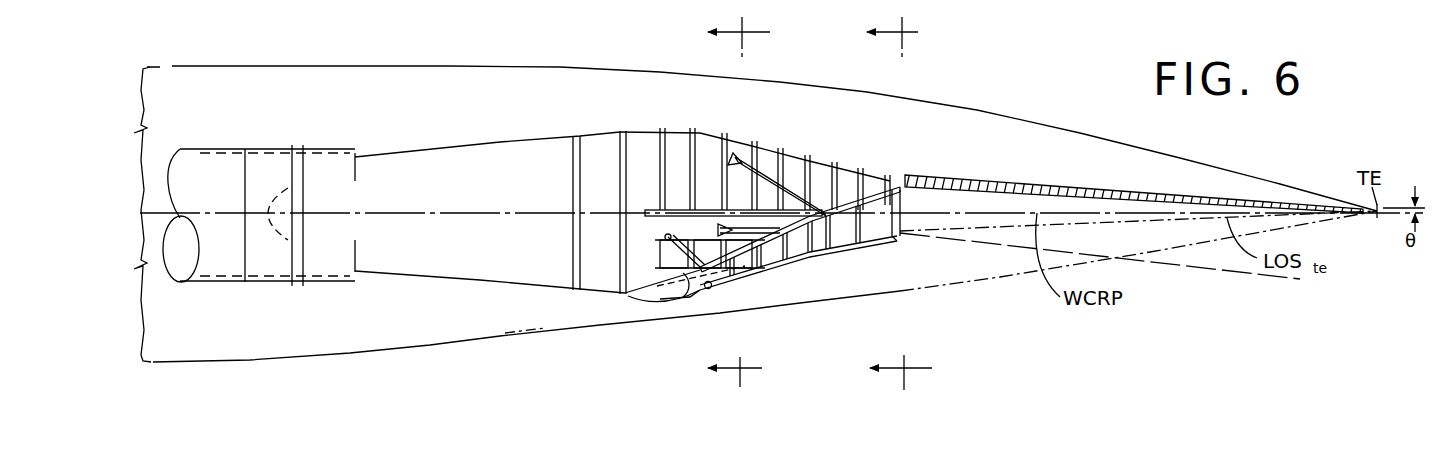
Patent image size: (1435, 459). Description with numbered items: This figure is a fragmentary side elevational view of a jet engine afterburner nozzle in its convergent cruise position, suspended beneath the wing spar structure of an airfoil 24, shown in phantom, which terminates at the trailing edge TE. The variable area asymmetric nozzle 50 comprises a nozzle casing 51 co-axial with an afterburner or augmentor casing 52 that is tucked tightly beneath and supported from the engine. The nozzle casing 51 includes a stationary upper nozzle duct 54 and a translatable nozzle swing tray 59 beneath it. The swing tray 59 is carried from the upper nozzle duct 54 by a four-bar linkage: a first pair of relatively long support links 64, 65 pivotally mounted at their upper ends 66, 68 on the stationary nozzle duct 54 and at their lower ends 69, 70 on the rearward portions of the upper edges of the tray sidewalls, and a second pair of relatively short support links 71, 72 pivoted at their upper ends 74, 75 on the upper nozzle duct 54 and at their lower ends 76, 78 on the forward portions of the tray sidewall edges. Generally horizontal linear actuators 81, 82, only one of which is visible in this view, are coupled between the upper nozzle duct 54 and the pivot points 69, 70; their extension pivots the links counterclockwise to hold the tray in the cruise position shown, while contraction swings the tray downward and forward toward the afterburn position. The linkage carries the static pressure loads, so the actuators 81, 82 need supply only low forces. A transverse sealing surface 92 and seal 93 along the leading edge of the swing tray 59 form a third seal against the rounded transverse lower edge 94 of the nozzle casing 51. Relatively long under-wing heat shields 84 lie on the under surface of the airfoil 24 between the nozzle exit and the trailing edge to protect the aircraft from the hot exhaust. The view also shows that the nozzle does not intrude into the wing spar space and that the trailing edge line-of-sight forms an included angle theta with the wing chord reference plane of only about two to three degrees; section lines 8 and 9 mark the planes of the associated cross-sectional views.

The section line 8- 8 is at (739, 198).
The section line 9- 9 is at (899, 198).
The airfoil 24 is at (784, 77).
The variable area asymmetric nozzle 50 is at (907, 220).
The nozzle casing 51 is at (713, 130).
The afterburner or augmentor casing 52 is at (541, 135).
The stationary upper nozzle duct 54 is at (862, 162).
The translatable nozzle swing tray 59 is at (889, 253).
The long support link 64 is at (769, 167).
The long support link 65 is at (770, 180).
The upper end of long support link 66 is at (777, 163).
The upper end of long support link 68 is at (737, 157).
The lower end of long support link 69 is at (848, 269).
The lower end of long support link 70 is at (848, 269).
The short support link 71 is at (636, 248).
The short support link 72 is at (678, 263).
The upper end of short support link 74 is at (643, 218).
The upper end of short support link 75 is at (674, 234).
The lower end of short support link 76 is at (640, 322).
The lower end of short support link 78 is at (683, 290).
The linear actuator 81 is at (798, 293).
The linear actuator 82 is at (752, 277).
The under-wing heat shield 84 is at (1007, 188).
The transverse sealing surface 92 is at (710, 295).
The seal 93 is at (677, 295).
The rounded transverse lower edge of nozzle casing 94 is at (647, 297).